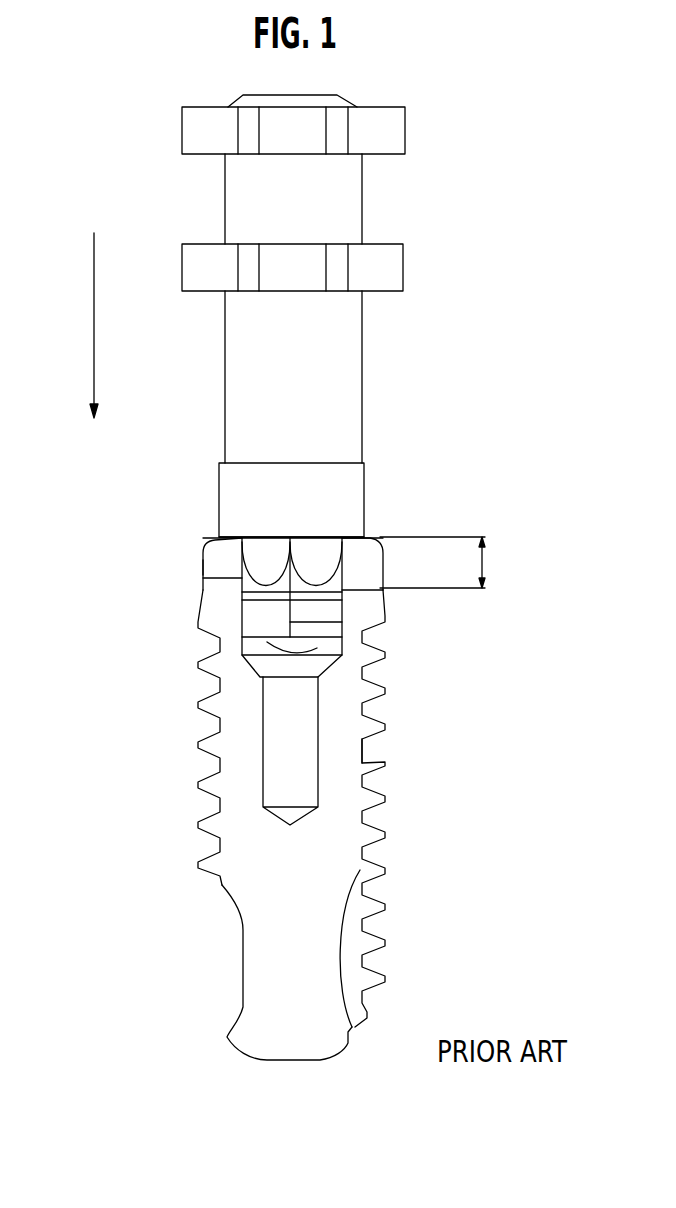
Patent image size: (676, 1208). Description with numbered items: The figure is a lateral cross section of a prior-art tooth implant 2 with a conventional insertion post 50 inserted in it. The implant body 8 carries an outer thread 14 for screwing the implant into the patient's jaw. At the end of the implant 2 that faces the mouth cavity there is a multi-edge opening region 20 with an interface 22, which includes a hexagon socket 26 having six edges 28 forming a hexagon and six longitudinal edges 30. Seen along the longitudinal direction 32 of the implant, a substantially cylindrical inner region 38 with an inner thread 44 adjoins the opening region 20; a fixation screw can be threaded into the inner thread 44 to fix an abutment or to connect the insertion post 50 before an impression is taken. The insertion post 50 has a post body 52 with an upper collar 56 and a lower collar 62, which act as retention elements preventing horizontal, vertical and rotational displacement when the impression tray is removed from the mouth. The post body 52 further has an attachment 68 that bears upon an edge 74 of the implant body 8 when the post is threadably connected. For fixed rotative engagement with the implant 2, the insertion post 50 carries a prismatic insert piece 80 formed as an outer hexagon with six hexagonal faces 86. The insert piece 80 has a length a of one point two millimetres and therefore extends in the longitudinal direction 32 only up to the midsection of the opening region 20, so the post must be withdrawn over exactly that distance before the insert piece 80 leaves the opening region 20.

The tooth implant 2 is at (286, 798).
The implant body 8 is at (345, 712).
The outer thread 14 is at (385, 763).
The multi-edge opening region 20 is at (249, 584).
The interface 22 is at (207, 577).
The hexagon socket 26 is at (210, 548).
The edges 28 is at (313, 648).
The longitudinal edges 30 is at (290, 620).
The longitudinal direction 32 is at (92, 313).
The cylindrical inner region 38 is at (236, 770).
The inner thread 44 is at (318, 740).
The insertion post 50 is at (301, 460).
The post body 52 is at (362, 193).
The upper collar 56 is at (405, 127).
The lower collar 62 is at (403, 265).
The attachment 68 is at (365, 478).
The edge 74 is at (203, 532).
The insert piece 80 is at (373, 567).
The hexagonal faces 86 is at (317, 565).
The length a is at (487, 565).